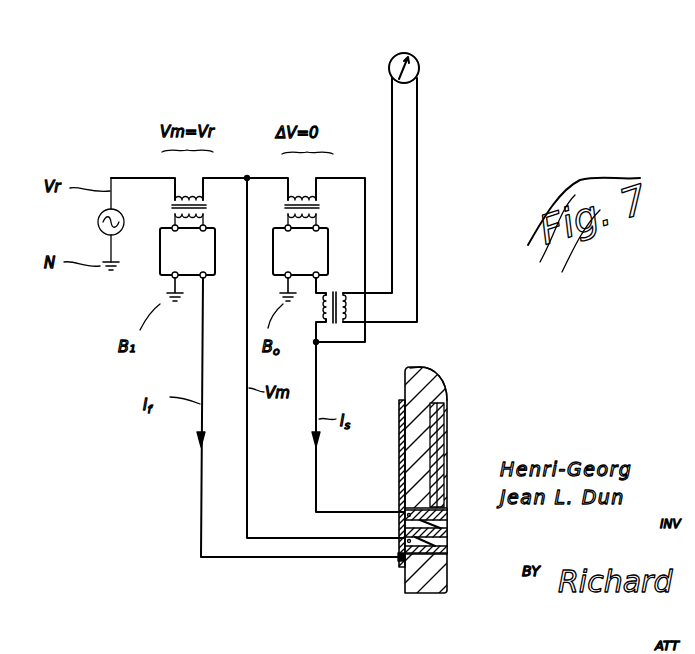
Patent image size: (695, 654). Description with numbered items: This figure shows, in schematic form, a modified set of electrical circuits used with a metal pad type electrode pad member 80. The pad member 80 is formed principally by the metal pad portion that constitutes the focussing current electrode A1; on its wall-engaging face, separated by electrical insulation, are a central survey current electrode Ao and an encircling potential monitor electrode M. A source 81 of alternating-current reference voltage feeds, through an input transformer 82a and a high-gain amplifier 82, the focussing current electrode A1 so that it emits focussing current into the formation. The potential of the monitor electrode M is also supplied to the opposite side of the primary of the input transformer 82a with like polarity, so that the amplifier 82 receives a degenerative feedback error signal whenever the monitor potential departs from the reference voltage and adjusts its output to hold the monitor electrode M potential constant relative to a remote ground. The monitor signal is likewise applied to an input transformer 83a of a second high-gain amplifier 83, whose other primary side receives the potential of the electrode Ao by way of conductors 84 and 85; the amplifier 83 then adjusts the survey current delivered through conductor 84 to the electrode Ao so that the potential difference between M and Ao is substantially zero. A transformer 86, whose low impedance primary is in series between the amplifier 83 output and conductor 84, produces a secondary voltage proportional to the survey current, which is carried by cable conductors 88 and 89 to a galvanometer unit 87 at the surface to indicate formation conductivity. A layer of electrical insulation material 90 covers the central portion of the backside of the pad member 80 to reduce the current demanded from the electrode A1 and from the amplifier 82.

The electrode pad member 80 is at (456, 581).
The source of alternating-current reference voltage 81 is at (97, 226).
The high-gain amplifier 82 is at (160, 243).
The input transformer 82a is at (172, 205).
The high-gain amplifier 83 is at (330, 238).
The input transformer 83a is at (283, 205).
The conductor 84 is at (319, 369).
The conductor 85 is at (367, 198).
The transformer 86 is at (336, 290).
The galvanometer unit 87 is at (393, 60).
The cable conductor 88 is at (392, 92).
The cable conductor 89 is at (417, 100).
The layer of electrical insulation material 90 is at (398, 470).
The focussing current electrode A1 is at (430, 387).
The potential monitor electrode M is at (446, 418).
The survey current electrode Ao is at (447, 510).